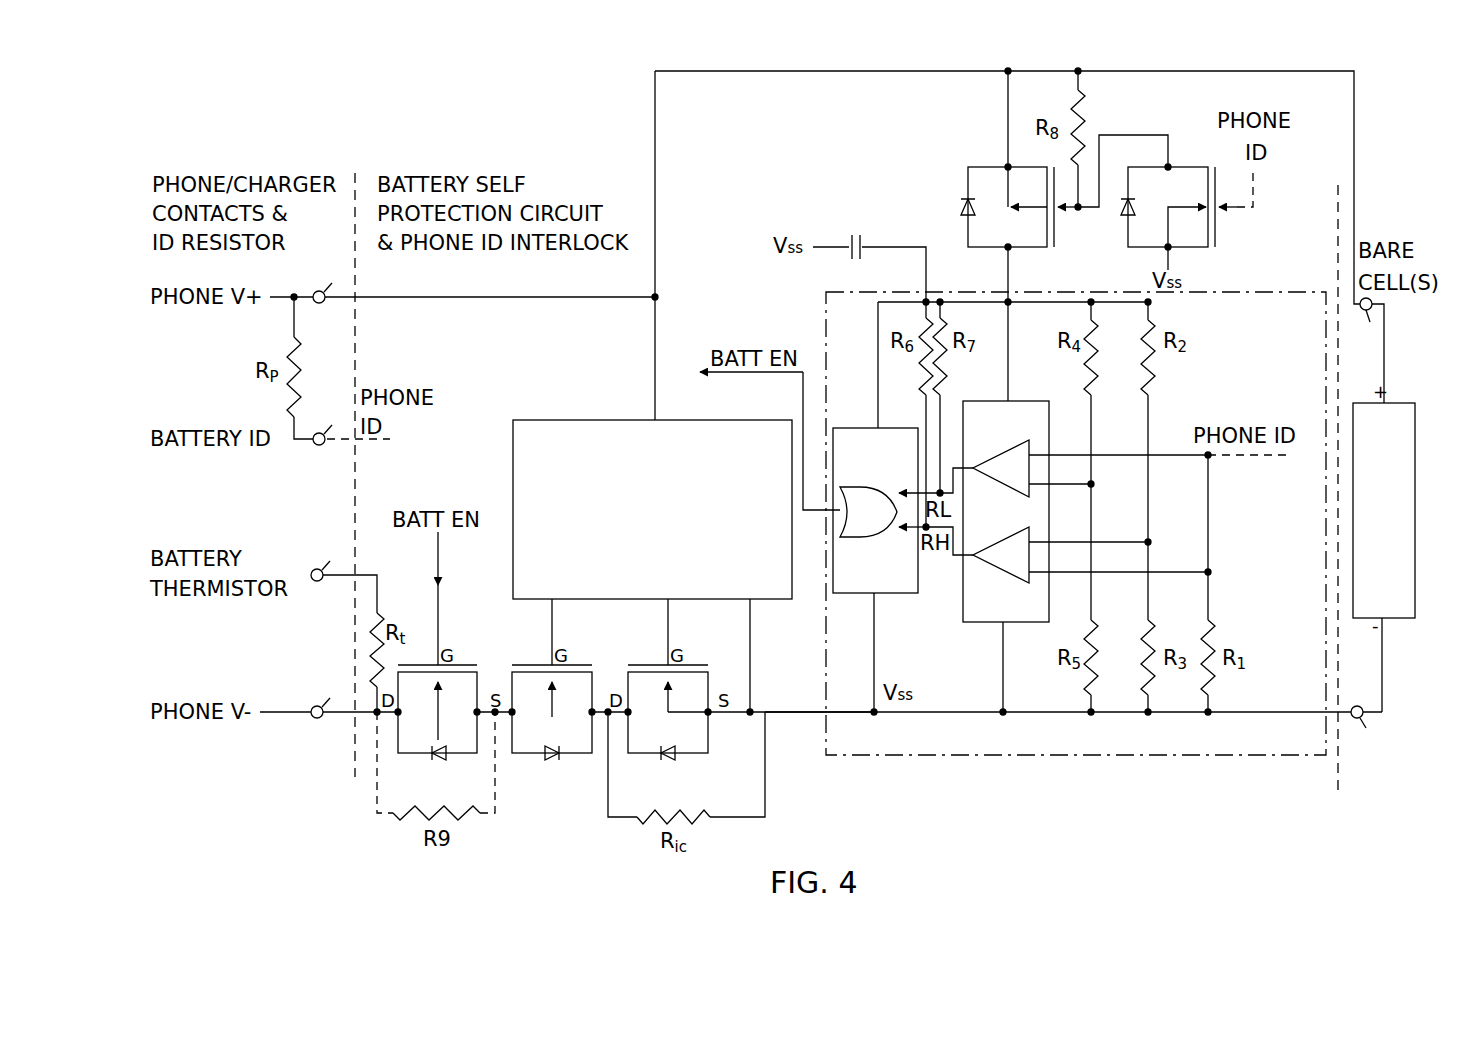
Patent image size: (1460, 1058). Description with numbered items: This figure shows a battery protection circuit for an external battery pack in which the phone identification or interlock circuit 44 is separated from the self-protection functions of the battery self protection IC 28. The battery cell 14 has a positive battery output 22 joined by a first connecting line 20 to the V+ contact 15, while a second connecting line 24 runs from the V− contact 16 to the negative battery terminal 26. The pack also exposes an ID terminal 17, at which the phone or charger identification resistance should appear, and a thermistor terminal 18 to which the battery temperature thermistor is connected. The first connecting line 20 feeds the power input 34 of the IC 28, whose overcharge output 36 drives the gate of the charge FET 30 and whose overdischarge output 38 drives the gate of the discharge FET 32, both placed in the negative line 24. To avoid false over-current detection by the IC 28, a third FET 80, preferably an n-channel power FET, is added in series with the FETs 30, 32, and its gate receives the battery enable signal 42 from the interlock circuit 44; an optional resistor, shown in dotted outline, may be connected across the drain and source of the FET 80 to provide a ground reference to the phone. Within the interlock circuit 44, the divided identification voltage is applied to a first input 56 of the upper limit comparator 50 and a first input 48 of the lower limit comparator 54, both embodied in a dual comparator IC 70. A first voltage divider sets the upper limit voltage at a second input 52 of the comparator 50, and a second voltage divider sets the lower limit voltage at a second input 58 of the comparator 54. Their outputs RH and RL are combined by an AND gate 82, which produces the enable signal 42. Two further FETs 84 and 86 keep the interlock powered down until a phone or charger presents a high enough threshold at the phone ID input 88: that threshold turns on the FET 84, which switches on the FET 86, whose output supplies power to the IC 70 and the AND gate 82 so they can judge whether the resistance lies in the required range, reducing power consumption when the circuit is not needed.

The battery cell 14 is at (1393, 402).
The V+ contact 15 is at (327, 283).
The V− contact 16 is at (325, 698).
The ID terminal 17 is at (327, 425).
The thermistor terminal 18 is at (325, 561).
The first connecting line 20 is at (710, 72).
The positive battery output 22 is at (1369, 320).
The second connecting line 24 is at (787, 716).
The negative battery terminal 26 is at (1366, 728).
The battery self protection IC 28 is at (753, 420).
The charge switch FET 30 is at (573, 762).
The discharge switch FET 32 is at (693, 762).
The power input 34 is at (652, 420).
The overcharge (OCD) output 36 is at (556, 603).
The overdischarge (ODD) output 38 is at (672, 603).
The battery enable signal 42 is at (442, 598).
The phone identification circuit 44 is at (1085, 757).
The first input to lower limit comparator 48 is at (1032, 455).
The upper limit comparator 50 is at (990, 570).
The second input to upper limit comparator 52 is at (1031, 542).
The lower limit comparator 54 is at (993, 455).
The first input to upper limit comparator 56 is at (1031, 572).
The second input to lower limit comparator 58 is at (1031, 484).
The comparator IC 70 is at (960, 598).
The third FET 80 is at (461, 762).
The AND gate 82 is at (852, 525).
The enable FET 84 is at (1172, 160).
The power switching FET 86 is at (973, 163).
The phone ID input 88 is at (1256, 190).